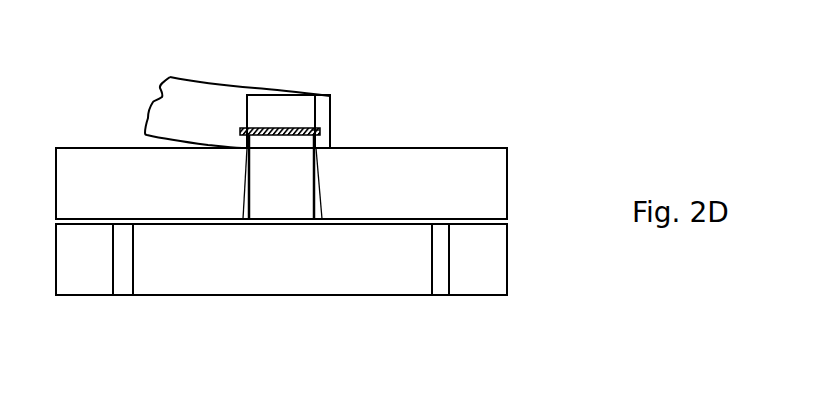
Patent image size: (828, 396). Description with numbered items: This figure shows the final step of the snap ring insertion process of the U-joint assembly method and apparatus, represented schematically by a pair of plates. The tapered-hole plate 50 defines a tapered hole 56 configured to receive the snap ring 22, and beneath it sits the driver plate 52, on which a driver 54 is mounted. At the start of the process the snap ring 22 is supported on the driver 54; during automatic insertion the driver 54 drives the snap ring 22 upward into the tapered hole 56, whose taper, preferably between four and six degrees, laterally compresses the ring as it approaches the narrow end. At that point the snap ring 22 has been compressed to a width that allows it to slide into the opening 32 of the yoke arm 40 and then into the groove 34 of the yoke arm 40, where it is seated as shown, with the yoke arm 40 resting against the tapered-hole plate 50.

The snap ring 22 is at (283, 132).
The opening of yoke arm 32 is at (246, 102).
The groove of yoke arm 34 is at (318, 130).
The yoke arm 40 is at (186, 127).
The tapered-hole plate 50 is at (451, 197).
The driver plate 52 is at (462, 264).
The driver 54 is at (275, 195).
The tapered hole 56 is at (320, 190).